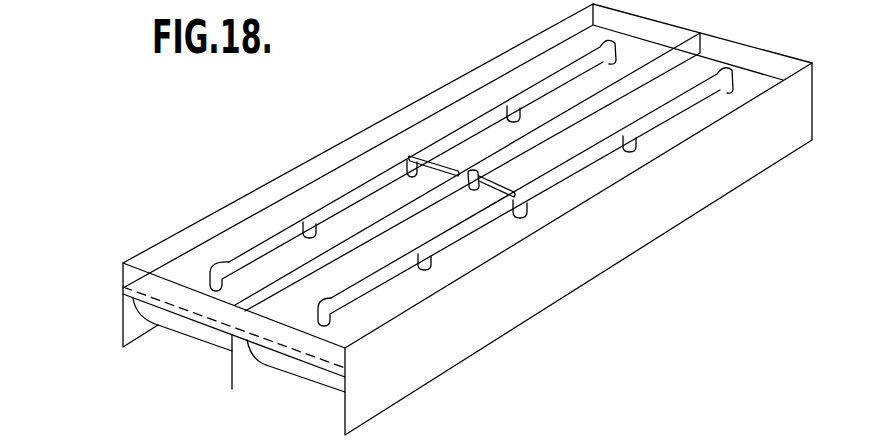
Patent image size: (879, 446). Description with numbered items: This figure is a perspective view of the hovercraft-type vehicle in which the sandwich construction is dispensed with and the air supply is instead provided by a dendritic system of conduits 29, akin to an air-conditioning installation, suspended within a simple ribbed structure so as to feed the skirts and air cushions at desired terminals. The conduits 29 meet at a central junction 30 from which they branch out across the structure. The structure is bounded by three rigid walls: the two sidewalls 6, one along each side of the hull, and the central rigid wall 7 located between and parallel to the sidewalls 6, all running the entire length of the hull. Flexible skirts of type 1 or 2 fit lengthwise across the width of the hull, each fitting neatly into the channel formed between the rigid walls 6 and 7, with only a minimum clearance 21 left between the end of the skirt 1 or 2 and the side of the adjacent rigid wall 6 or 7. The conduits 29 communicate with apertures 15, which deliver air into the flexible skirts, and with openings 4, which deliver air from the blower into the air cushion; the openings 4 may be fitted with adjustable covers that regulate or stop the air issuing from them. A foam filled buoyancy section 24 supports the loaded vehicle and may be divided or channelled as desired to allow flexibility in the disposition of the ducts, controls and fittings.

The flexible skirt type 1 is at (467, 225).
The flexible skirt type 2 is at (195, 328).
The outlets 4 is at (317, 242).
The rigid sidewalls 6 is at (467, 249).
The central rigid wall 7 is at (466, 211).
The apertures 15 is at (243, 294).
The minimum clearance 21 is at (145, 318).
The foam filled buoyancy section 24 is at (123, 287).
The conduits 29 is at (439, 165).
The pivot joint 30 is at (474, 189).